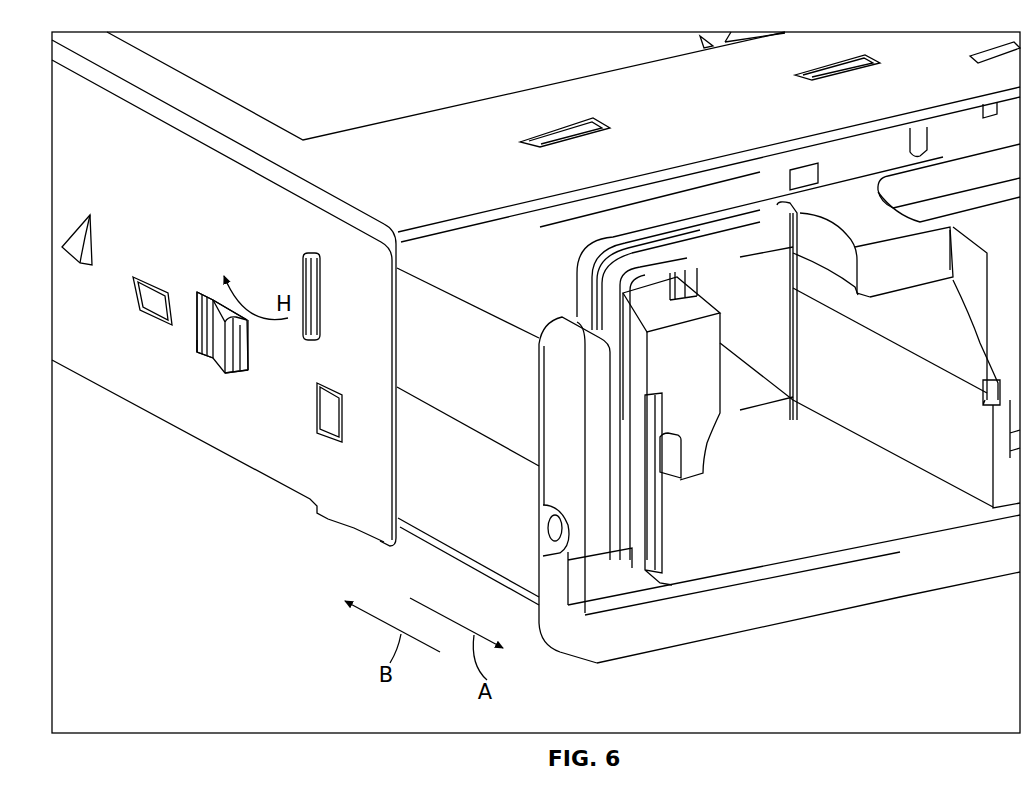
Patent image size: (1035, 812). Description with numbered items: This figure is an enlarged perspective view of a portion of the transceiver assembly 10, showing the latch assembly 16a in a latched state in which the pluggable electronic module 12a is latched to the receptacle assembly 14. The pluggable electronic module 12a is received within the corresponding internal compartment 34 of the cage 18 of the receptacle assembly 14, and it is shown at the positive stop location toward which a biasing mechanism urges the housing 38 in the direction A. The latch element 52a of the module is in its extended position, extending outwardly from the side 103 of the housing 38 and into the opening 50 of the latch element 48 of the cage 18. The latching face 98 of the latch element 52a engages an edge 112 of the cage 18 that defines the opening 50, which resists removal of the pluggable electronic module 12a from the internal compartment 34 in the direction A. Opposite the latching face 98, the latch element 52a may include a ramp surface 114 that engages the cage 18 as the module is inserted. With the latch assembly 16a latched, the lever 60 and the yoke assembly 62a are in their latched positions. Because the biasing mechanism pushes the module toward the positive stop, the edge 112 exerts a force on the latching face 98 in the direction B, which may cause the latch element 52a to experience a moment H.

The transceiver assembly 10 is at (878, 634).
The pluggable electronic module 12a is at (641, 643).
The receptacle assembly 14 is at (325, 540).
The latch assembly 16a is at (883, 288).
The cage 18 is at (376, 531).
The internal compartment 34 is at (493, 227).
The housing 38 is at (518, 598).
The latch element 48 is at (252, 348).
The opening 50 is at (209, 365).
The latch element 52a is at (196, 352).
The lever 60 is at (827, 236).
The yoke assembly 62a is at (655, 560).
The latching face 98 is at (240, 376).
The side 103 is at (494, 542).
The edge 112 is at (246, 378).
The ramp surface 114 is at (197, 290).